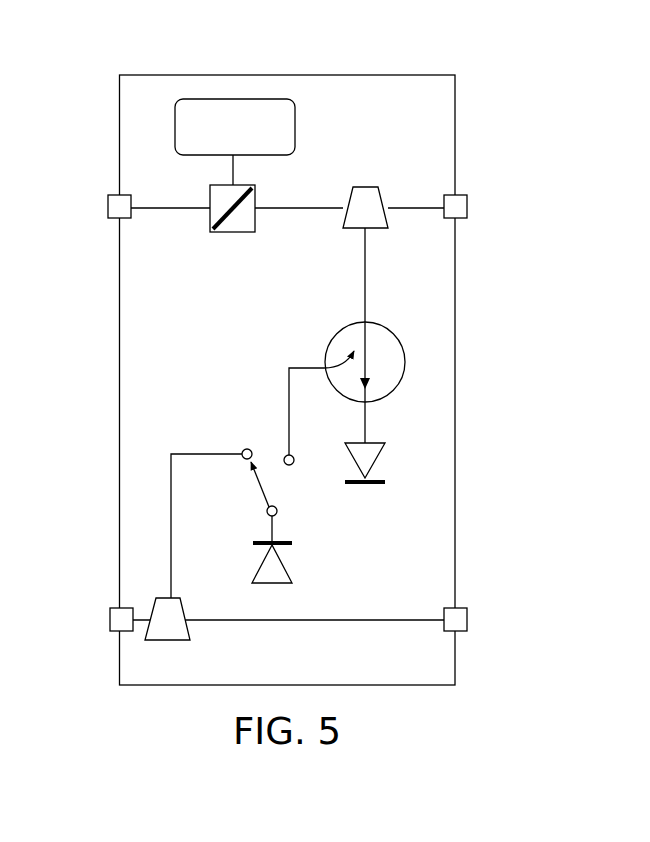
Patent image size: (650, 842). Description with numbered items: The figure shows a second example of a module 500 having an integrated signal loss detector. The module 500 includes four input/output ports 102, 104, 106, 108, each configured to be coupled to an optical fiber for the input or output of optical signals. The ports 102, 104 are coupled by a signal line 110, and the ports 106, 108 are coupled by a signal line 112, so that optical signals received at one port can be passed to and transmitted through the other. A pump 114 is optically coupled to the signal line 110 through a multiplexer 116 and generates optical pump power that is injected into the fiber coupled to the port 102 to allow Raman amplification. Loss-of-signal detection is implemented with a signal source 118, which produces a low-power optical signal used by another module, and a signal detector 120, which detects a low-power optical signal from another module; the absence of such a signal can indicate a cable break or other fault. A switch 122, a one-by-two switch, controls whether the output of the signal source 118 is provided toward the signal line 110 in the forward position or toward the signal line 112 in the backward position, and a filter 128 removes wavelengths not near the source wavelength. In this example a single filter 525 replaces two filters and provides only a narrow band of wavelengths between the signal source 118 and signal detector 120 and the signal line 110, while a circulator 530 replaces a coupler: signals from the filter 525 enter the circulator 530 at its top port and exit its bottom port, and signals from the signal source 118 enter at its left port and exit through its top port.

The module 500 is at (388, 49).
The input/output port 102 is at (112, 192).
The input/output port 104 is at (463, 188).
The input/output port 106 is at (112, 606).
The input/output port 108 is at (460, 603).
The signal line 110 is at (297, 211).
The signal line 112 is at (341, 614).
The pump 114 is at (301, 130).
The multiplexer 116 is at (229, 234).
The signal source 118 is at (289, 558).
The signal detector 120 is at (383, 463).
The switch 122 is at (265, 439).
The filter 128 is at (177, 595).
The filter 525 is at (371, 232).
The circulator 530 is at (327, 333).